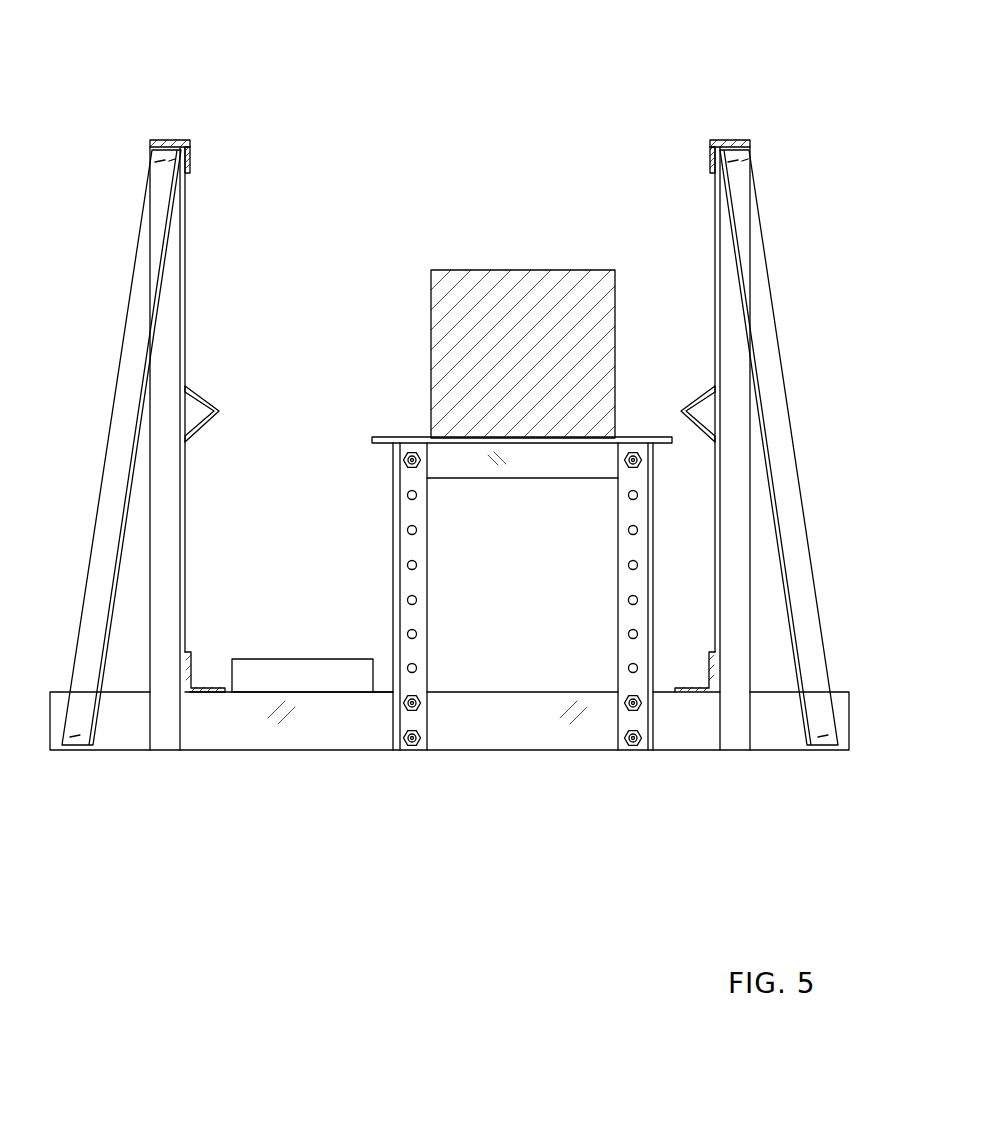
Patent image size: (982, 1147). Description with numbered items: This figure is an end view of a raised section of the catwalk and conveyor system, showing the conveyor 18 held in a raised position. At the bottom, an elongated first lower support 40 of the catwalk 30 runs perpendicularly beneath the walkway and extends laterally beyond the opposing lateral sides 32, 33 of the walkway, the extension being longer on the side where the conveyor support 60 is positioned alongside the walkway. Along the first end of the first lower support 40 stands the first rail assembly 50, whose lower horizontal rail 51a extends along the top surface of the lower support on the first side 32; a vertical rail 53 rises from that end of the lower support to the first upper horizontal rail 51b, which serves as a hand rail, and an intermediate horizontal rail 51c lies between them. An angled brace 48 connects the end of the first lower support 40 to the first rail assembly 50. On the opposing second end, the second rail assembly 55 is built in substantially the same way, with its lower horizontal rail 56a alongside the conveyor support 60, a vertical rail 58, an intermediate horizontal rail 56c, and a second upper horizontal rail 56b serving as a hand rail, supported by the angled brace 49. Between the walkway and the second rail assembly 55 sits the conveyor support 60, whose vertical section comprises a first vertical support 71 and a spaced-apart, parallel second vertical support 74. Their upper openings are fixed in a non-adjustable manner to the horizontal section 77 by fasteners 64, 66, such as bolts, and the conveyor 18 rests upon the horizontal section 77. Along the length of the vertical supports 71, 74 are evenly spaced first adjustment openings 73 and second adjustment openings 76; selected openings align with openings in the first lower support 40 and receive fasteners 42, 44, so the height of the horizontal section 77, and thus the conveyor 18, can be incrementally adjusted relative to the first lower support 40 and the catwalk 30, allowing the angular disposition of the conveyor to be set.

The conveyor 18 is at (522, 290).
The catwalk 30 is at (300, 663).
The first lateral side 32 is at (213, 690).
The second lateral side 33 is at (383, 690).
The first lower support 40 is at (449, 772).
The fastener 42 is at (420, 705).
The fastener 44 is at (625, 705).
The angled brace 48 is at (140, 210).
The angled brace 49 is at (760, 205).
The first rail assembly 50 is at (192, 383).
The lower horizontal rail 51a is at (190, 665).
The first upper horizontal rail 51b is at (175, 138).
The intermediate horizontal rail 51c is at (197, 393).
The vertical rail 53 is at (185, 210).
The second rail assembly 55 is at (715, 426).
The lower horizontal rail 56a is at (683, 668).
The second upper horizontal rail 56b is at (708, 155).
The intermediate horizontal rail 56c is at (705, 395).
The vertical rail 58 is at (715, 245).
The conveyor support 60 is at (492, 594).
The fastener 64 is at (400, 458).
The fastener 66 is at (643, 462).
The first vertical support 71 is at (390, 555).
The first adjustment openings 73 is at (417, 497).
The second vertical support 74 is at (655, 580).
The second adjustment openings 76 is at (628, 497).
The horizontal section 77 is at (530, 478).